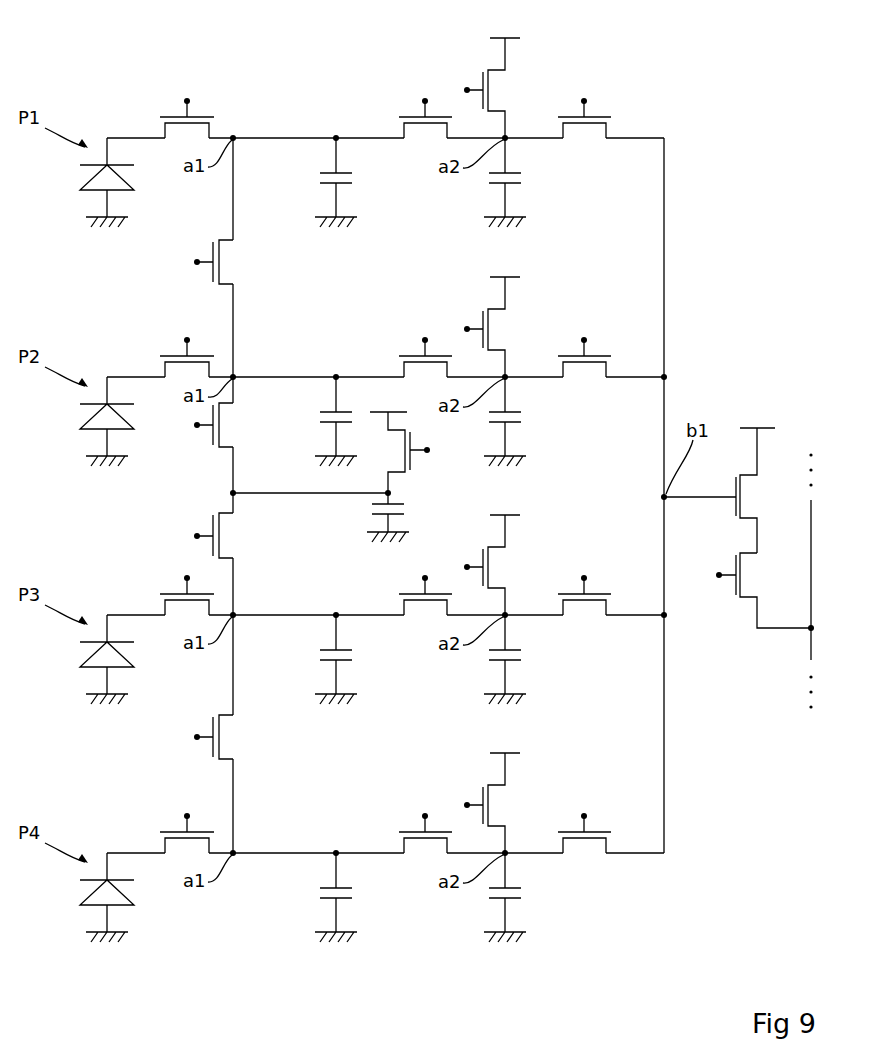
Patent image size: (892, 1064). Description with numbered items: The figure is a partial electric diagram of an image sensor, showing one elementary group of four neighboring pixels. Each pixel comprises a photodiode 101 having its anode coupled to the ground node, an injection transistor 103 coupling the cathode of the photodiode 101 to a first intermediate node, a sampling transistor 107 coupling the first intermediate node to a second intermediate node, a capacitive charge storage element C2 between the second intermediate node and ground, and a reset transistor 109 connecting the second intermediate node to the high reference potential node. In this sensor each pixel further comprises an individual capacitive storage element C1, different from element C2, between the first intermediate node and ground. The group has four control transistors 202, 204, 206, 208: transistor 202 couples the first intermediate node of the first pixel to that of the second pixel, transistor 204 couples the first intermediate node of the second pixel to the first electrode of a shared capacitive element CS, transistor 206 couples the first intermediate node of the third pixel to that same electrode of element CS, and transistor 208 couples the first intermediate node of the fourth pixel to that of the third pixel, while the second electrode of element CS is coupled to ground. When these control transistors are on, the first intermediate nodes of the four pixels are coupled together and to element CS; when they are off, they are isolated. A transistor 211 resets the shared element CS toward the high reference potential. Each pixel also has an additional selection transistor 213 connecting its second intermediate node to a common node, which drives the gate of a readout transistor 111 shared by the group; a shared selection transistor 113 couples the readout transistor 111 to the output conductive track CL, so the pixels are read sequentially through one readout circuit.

The photodiode 101 is at (89, 179).
The injection transistor 103 is at (172, 116).
The sampling transistor 107 is at (415, 116).
The reset transistor 109 is at (491, 78).
The readout transistor 111 is at (745, 492).
The selection transistor 113 is at (745, 579).
The control transistor 202 is at (212, 279).
The control transistor 204 is at (212, 438).
The control transistor 206 is at (212, 526).
The control transistor 208 is at (212, 752).
The reset transistor for shared capacitive element 211 is at (411, 470).
The additional selection transistor 213 is at (600, 116).
The individual capacitive storage element C1 is at (320, 184).
The capacitive charge storage element C2 is at (513, 185).
The shared capacitive element CS is at (404, 516).
The output conductive track CL is at (812, 572).